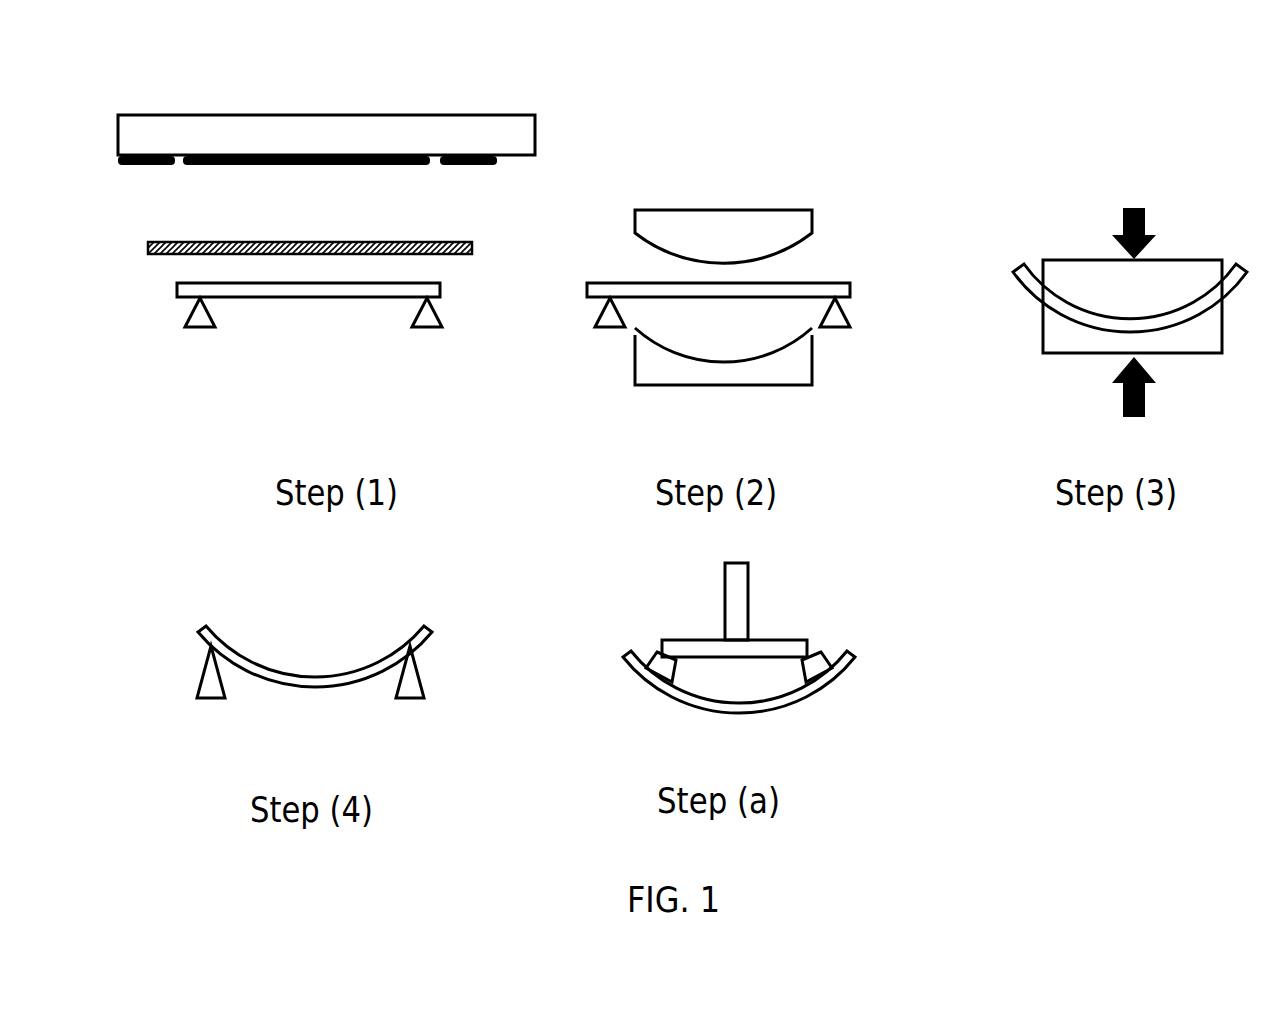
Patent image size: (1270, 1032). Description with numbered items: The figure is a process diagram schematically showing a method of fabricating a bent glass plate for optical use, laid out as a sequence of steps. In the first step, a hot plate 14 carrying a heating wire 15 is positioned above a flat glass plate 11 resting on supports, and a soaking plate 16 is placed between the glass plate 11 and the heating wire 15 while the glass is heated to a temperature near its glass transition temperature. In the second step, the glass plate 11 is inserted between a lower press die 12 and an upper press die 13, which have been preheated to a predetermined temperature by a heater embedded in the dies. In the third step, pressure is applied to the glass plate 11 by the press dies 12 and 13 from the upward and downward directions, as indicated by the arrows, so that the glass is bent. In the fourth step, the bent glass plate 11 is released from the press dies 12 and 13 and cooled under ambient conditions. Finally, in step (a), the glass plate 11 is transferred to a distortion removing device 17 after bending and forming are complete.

The glass plate 11 is at (290, 297).
The lower press die 12 is at (655, 385).
The upper press die 13 is at (770, 210).
The hot plate 14 is at (390, 115).
The heating wire 15 is at (397, 165).
The soaking plate 16 is at (160, 255).
The distortion removing device 17 is at (777, 630).